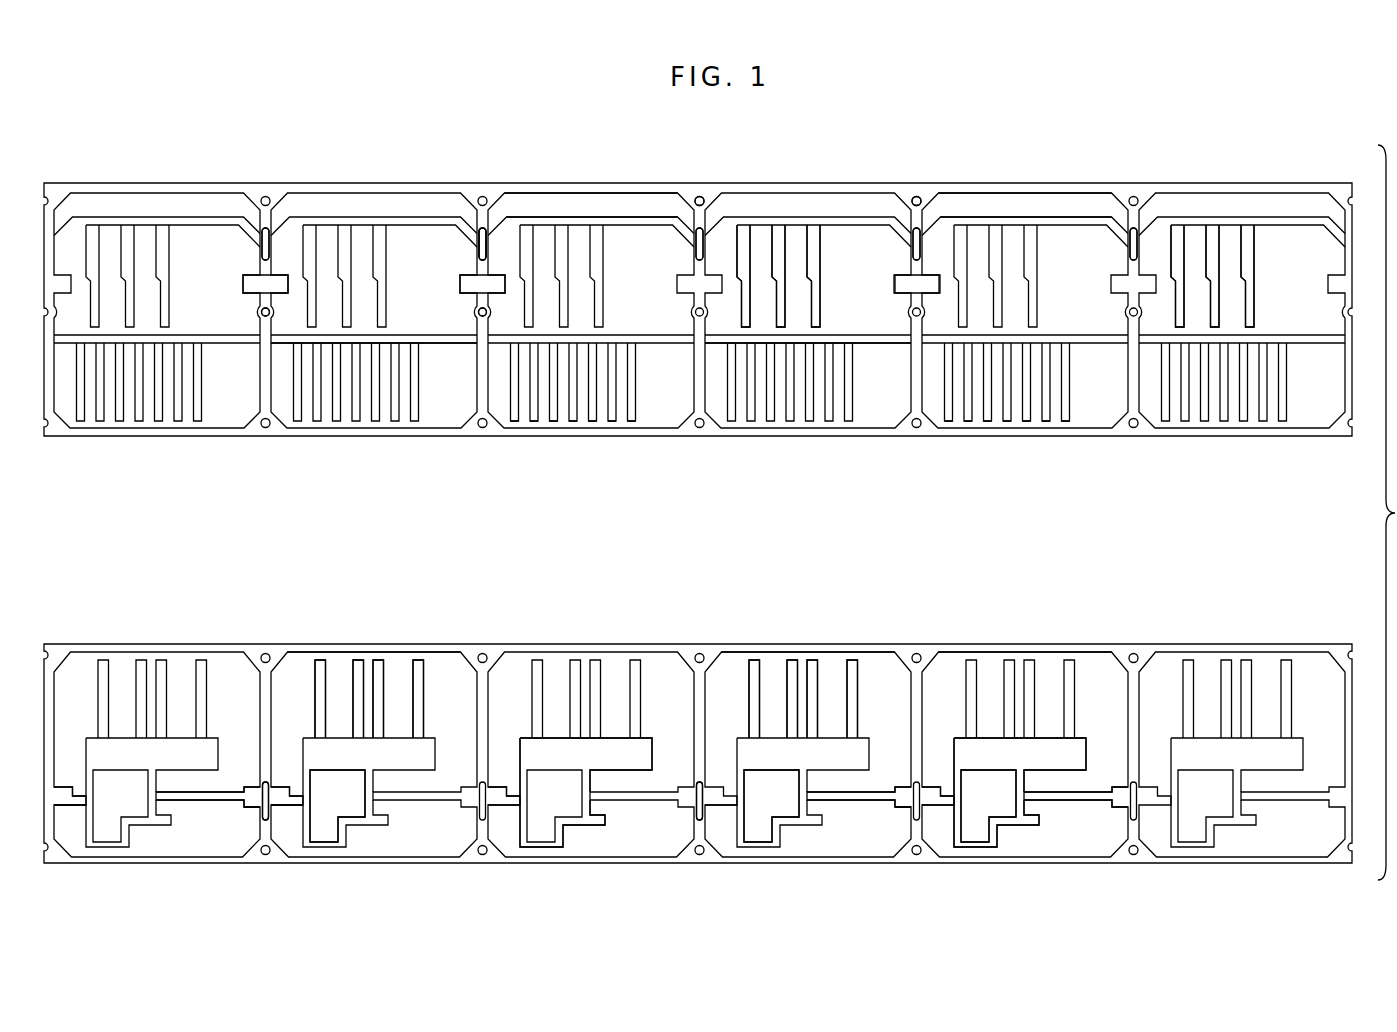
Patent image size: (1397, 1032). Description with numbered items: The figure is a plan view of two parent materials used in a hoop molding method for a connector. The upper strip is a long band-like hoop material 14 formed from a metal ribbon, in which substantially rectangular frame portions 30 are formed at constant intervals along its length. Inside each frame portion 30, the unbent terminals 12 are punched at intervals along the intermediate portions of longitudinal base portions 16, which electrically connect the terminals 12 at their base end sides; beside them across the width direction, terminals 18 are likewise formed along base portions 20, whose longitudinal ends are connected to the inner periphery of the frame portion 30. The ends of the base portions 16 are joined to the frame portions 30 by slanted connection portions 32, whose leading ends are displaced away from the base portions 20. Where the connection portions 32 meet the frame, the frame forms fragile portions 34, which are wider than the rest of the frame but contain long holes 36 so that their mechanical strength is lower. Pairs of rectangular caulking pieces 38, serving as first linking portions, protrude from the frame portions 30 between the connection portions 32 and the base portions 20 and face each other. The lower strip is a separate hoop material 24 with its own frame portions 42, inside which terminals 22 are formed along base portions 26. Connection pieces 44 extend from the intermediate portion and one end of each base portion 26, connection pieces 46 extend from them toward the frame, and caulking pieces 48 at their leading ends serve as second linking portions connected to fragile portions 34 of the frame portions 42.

The terminals 12 is at (777, 300).
The hoop material 14 is at (1122, 166).
The base portions 16 is at (621, 219).
The terminals 18 is at (514, 421).
The base portions 20 is at (441, 344).
The terminals 22 is at (358, 660).
The hoop material 24 is at (1198, 636).
The base portions 26 is at (652, 755).
The frame portions 30 is at (612, 204).
The connection portions 32 is at (271, 238).
The fragile portions 34 is at (488, 240).
The long holes 36 is at (697, 206).
The caulking pieces 38 is at (273, 312).
The frame portions 42 is at (443, 654).
The connection pieces 44 is at (347, 785).
The connection pieces 46 is at (78, 790).
The caulking pieces 48 is at (66, 812).